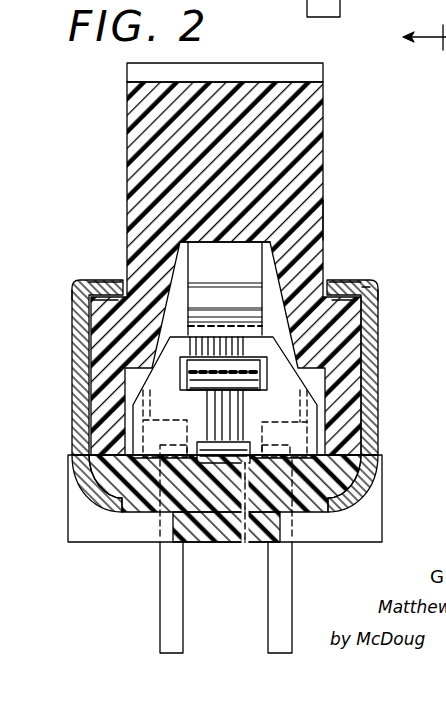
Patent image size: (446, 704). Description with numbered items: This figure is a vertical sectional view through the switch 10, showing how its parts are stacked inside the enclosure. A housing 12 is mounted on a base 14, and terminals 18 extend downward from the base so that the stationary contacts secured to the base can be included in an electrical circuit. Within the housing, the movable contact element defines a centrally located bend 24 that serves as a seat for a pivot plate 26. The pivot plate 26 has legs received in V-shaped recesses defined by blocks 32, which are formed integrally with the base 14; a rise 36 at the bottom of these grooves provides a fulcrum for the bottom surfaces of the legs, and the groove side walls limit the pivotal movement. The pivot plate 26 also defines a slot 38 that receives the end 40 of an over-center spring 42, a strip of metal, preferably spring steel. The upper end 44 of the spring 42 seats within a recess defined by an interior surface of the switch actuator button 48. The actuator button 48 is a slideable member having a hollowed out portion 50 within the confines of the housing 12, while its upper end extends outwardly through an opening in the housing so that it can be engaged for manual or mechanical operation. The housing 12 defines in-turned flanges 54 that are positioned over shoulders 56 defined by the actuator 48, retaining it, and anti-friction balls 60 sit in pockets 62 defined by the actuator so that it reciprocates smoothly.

The switch 10 is at (372, 184).
The housing 12 is at (380, 357).
The base 14 is at (212, 543).
The terminals 18 is at (287, 594).
The centrally located bend 24 is at (242, 543).
The pivot plate 26 is at (309, 385).
The blocks 32 is at (150, 408).
The rise 36 is at (160, 458).
The slot 38 is at (180, 362).
The end of over-center spring 40 is at (240, 387).
The over-center spring 42 is at (240, 292).
The upper end of spring 44 is at (325, 218).
The switch actuator button 48 is at (130, 183).
The hollowed out portion 50 is at (178, 285).
The in-turned flanges 54 is at (102, 282).
The shoulders 56 is at (73, 288).
The anti-friction balls 60 is at (370, 287).
The pockets 62 is at (110, 305).